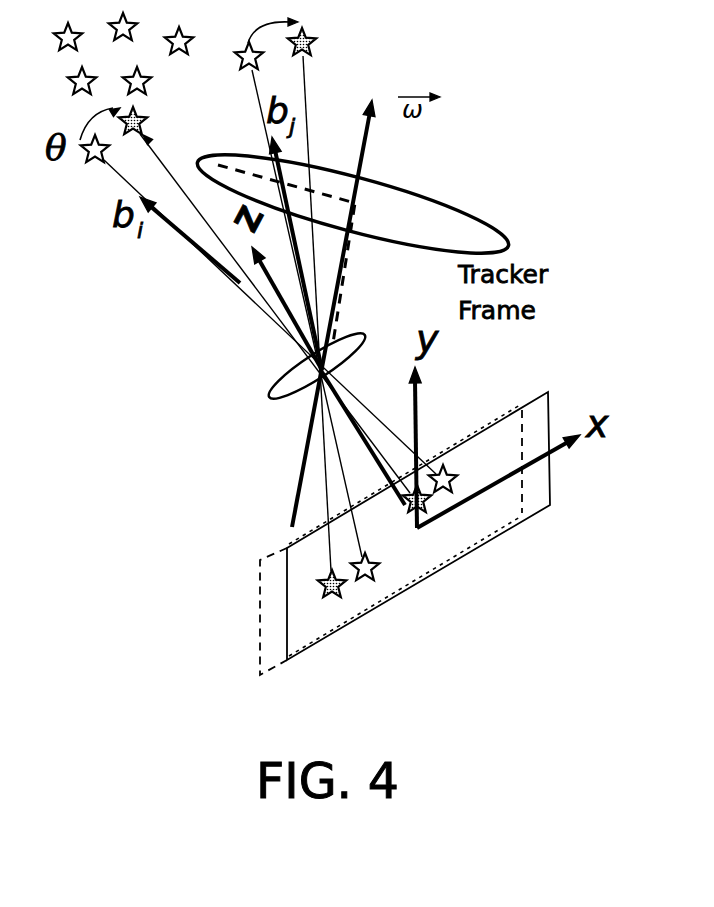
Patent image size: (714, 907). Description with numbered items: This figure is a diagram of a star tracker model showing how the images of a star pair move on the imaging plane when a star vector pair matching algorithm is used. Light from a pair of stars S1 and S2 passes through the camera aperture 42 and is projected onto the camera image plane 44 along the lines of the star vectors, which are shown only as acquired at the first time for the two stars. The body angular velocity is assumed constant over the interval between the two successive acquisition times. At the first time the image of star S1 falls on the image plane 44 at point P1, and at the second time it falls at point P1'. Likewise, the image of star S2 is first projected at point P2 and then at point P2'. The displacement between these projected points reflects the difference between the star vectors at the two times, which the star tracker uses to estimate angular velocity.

The camera aperture 42 is at (270, 397).
The camera image plane 44 is at (287, 587).
The star S1 is at (88, 160).
The star S2 is at (316, 47).
The point P1 is at (449, 542).
The point P1' is at (473, 425).
The point P2 is at (358, 630).
The point P2' is at (401, 604).